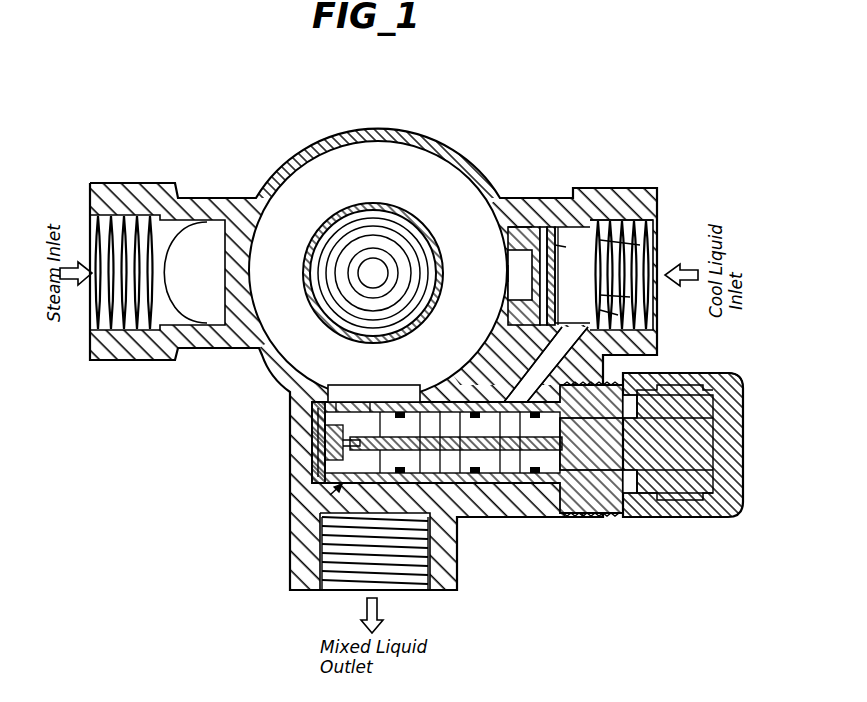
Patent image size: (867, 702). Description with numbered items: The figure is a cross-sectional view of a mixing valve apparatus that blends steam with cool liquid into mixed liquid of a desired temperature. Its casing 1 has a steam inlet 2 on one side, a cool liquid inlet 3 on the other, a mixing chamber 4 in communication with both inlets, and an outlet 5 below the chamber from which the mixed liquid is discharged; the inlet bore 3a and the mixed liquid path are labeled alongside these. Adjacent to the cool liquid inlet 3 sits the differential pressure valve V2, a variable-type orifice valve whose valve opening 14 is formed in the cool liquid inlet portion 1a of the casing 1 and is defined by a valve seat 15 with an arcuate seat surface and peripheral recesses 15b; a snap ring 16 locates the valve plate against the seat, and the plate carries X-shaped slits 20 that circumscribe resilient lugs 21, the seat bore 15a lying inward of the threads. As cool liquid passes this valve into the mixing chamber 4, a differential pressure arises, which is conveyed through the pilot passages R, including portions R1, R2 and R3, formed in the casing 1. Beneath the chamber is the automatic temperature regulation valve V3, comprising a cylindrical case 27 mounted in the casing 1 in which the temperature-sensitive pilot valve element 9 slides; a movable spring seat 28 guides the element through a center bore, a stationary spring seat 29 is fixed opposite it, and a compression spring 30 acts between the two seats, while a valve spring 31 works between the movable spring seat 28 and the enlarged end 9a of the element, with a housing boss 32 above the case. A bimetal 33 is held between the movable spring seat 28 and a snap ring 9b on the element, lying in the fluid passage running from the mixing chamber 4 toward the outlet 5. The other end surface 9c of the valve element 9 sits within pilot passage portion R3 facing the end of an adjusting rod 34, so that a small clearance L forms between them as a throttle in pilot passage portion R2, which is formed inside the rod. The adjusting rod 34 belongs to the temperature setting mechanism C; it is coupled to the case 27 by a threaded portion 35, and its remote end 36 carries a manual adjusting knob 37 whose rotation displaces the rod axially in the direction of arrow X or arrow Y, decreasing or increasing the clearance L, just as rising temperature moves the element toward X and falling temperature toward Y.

The casing 1 is at (212, 192).
The cool liquid inlet portion 1a is at (578, 200).
The steam inlet 2 is at (108, 302).
The cool liquid inlet 3 is at (653, 230).
The inlet bore 3a is at (630, 297).
The mixing chamber 4 is at (452, 178).
The outlet 5 is at (438, 485).
The temperature-sensitive pilot valve element 9 is at (413, 484).
The enlarged end 9a is at (330, 448).
The snap ring 9b is at (378, 484).
The end surface 9c is at (464, 520).
The valve opening 14 is at (637, 208).
The valve seat 15 is at (507, 272).
The seat bore 15a is at (618, 315).
The recesses 15b is at (512, 226).
The snap ring 16 is at (604, 212).
The X-shaped slits 20 is at (566, 247).
The resilient lugs 21 is at (640, 245).
The cylindrical case 27 is at (358, 484).
The movable spring seat 28 is at (348, 402).
The stationary spring seat 29 is at (330, 434).
The compression spring 30 is at (312, 399).
The valve spring 31 is at (317, 478).
The housing boss 32 is at (410, 400).
The bimetal 33 is at (378, 405).
The adjusting rod 34 is at (527, 514).
The threaded portion 35 is at (671, 518).
The end 36 is at (714, 518).
The manual adjusting knob 37 is at (731, 381).
The differential pressure valve V2 is at (536, 235).
The automatic temperature regulation valve V3 is at (322, 513).
The pilot passages R is at (450, 335).
The pilot passage portion R1 is at (449, 335).
The pilot passage portion R2 is at (449, 346).
The pilot passage portion R3 is at (450, 348).
The small clearance L is at (470, 517).
The temperature setting mechanism C is at (640, 520).
The arrow X is at (553, 543).
The arrow Y is at (561, 540).